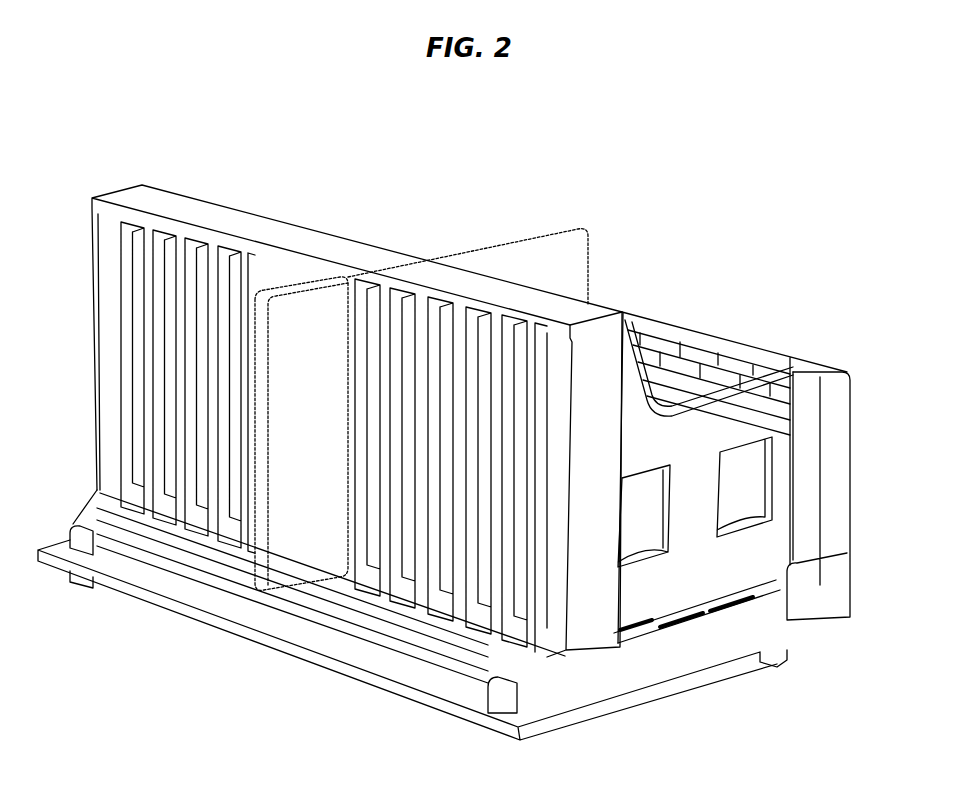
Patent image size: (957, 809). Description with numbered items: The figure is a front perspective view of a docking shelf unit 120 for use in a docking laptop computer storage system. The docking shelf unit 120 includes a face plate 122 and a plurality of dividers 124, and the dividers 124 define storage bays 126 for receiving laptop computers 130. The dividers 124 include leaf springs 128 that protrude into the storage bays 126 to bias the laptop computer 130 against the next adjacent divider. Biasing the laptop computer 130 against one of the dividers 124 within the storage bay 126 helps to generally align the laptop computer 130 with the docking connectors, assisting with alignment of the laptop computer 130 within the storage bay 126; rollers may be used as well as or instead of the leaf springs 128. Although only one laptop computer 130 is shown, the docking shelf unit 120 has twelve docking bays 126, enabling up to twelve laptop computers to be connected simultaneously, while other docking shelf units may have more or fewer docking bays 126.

The docking shelf unit 120 is at (286, 196).
The face plate 122 is at (137, 195).
The dividers 124 is at (728, 377).
The storage bays 126 is at (653, 322).
The leaf springs 128 is at (635, 533).
The laptop computer 130 is at (597, 222).